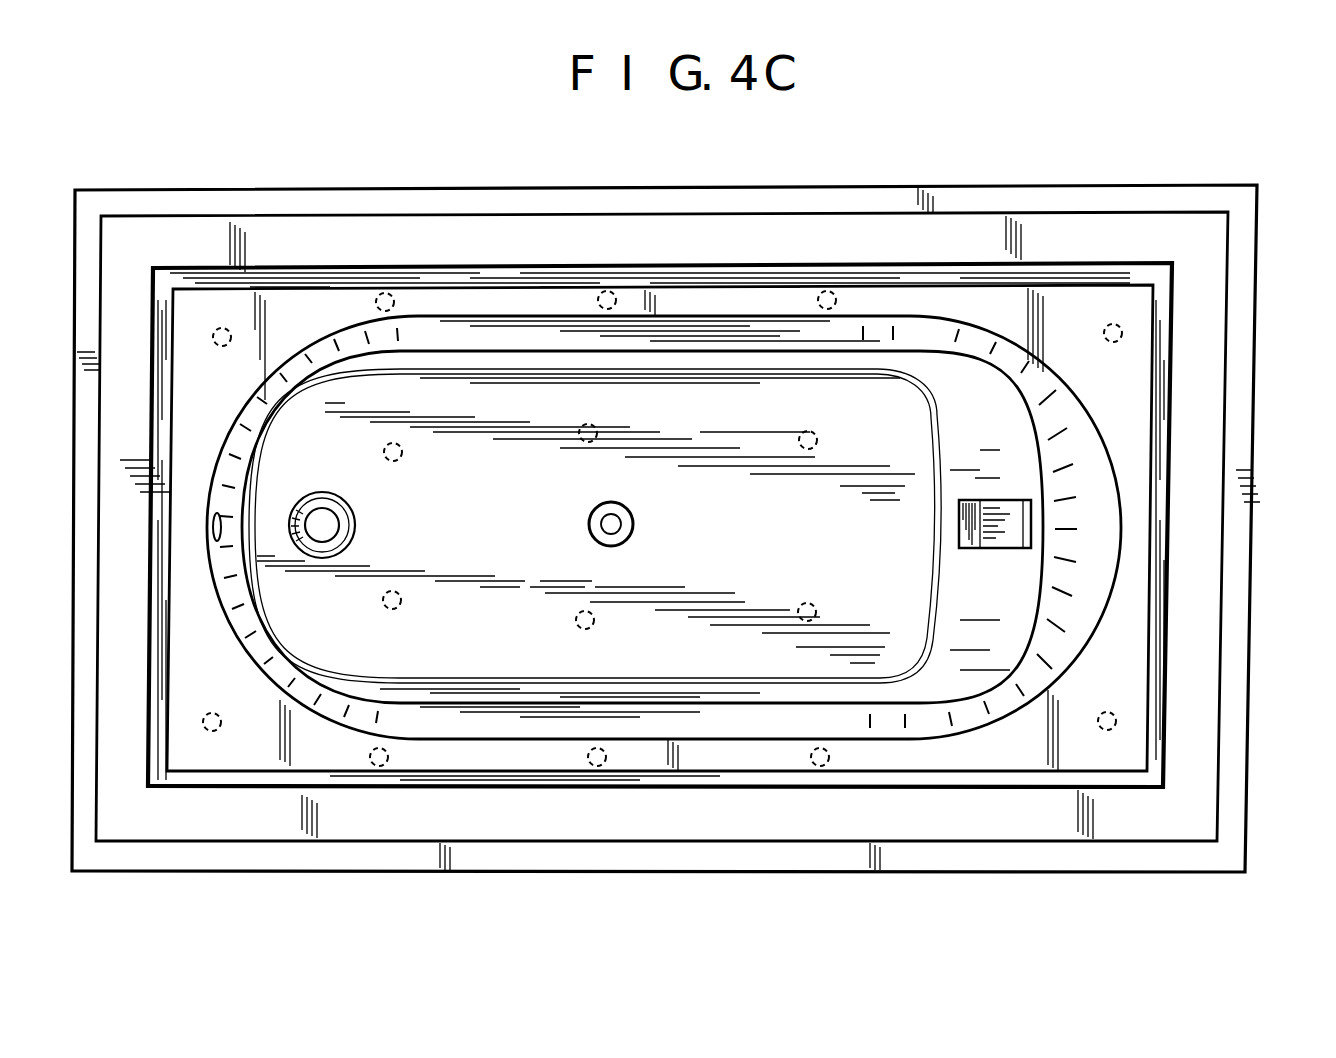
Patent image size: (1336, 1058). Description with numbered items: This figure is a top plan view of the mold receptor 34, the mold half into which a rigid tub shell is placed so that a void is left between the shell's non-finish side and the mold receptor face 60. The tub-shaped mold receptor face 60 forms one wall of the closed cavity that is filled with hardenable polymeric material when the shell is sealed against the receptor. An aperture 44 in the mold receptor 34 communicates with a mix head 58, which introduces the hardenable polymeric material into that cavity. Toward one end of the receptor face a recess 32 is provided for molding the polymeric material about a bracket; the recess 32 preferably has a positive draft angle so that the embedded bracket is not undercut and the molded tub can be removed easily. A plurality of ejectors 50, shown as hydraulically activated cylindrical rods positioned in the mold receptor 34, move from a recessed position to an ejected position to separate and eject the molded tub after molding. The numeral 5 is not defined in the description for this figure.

The mold receptor 34 is at (918, 185).
The bathtub 5 is at (1160, 357).
The mold receptor face 60 is at (424, 345).
The aperture 44 is at (605, 518).
The mix head 58 is at (633, 517).
The recess 32 is at (963, 522).
The ejectors 50 is at (400, 603).